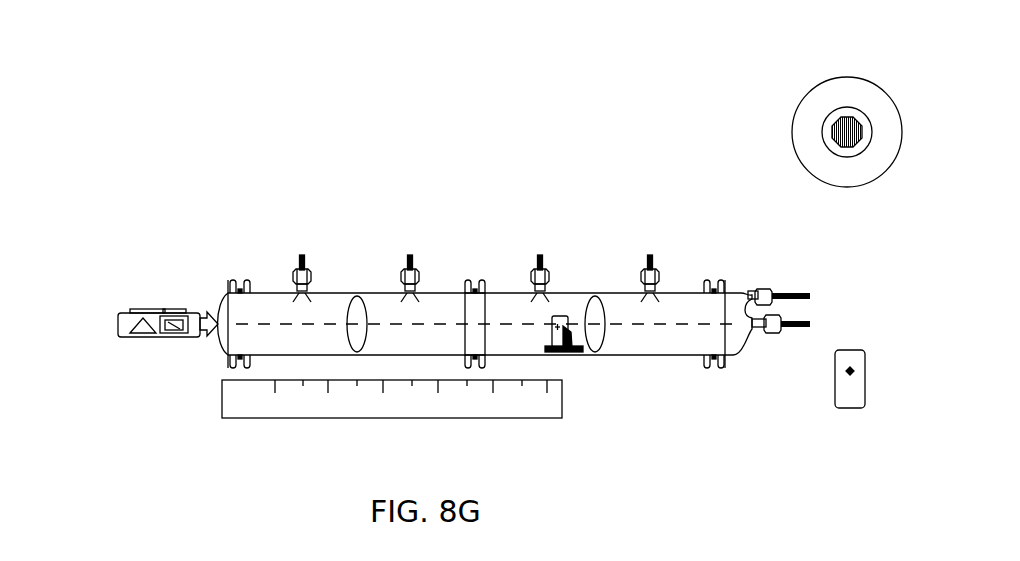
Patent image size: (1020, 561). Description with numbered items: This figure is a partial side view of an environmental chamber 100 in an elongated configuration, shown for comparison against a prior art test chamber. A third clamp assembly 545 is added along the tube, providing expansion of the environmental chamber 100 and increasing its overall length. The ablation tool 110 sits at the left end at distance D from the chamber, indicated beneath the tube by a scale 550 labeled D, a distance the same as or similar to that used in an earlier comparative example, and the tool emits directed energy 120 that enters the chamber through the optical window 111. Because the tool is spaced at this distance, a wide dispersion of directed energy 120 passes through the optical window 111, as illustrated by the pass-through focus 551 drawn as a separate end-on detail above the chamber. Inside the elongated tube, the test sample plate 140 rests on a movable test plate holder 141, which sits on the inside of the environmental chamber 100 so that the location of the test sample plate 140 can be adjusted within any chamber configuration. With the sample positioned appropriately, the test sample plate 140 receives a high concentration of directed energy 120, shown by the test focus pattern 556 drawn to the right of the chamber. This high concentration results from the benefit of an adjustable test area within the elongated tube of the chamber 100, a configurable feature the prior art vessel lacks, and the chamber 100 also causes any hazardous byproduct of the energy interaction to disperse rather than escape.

The environmental chamber 100 is at (617, 205).
The ablation tool 110 is at (162, 308).
The optical window 111 is at (220, 300).
The directed energy 120 is at (215, 322).
The test sample plate 140 is at (570, 356).
The movable test plate holder 141 is at (587, 352).
The third clamp assembly 545 is at (472, 302).
The scale 550 is at (370, 402).
The pass-through focus 551 is at (847, 150).
The test focus pattern 556 is at (850, 388).